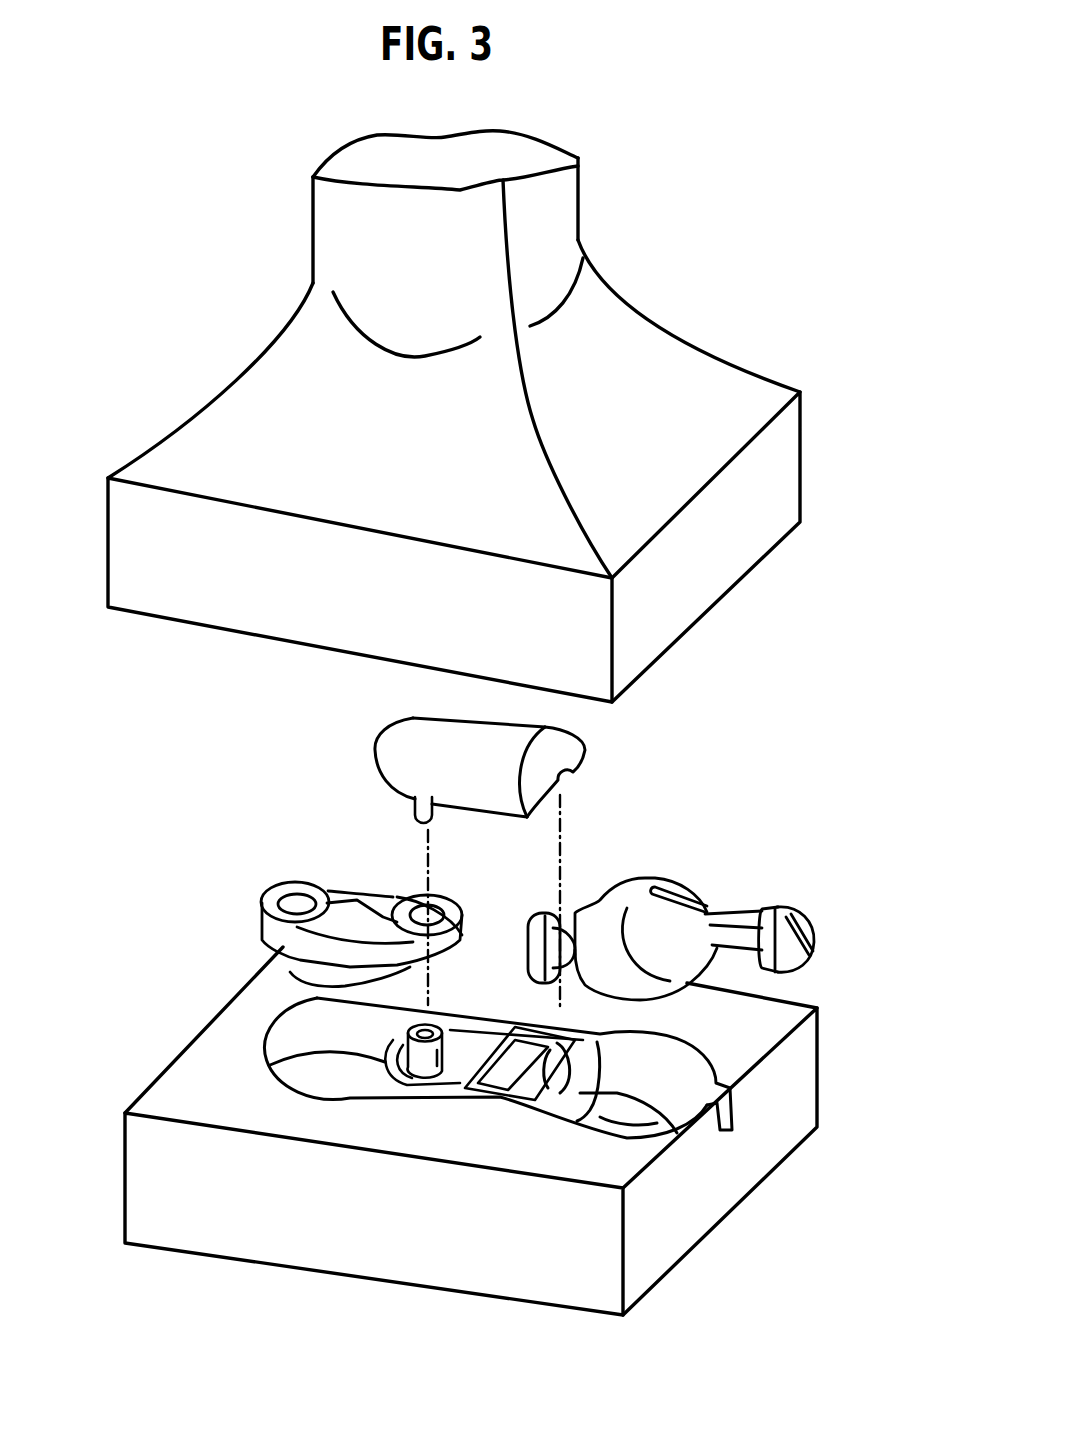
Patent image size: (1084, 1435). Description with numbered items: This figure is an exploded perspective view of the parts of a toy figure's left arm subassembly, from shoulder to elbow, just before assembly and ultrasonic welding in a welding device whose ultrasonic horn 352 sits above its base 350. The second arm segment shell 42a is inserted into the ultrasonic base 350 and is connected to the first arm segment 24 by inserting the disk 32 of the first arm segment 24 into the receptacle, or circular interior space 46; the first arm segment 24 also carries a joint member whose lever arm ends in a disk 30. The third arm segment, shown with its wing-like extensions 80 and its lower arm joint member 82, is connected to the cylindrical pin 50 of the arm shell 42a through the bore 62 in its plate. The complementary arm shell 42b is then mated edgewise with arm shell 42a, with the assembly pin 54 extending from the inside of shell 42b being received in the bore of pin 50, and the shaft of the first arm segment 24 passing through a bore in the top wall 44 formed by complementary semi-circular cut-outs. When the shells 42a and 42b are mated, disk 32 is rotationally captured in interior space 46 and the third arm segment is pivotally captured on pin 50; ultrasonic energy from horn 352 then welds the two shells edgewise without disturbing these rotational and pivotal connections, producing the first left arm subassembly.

The ultrasonic horn 352 is at (782, 480).
The ultrasonic base 350 is at (535, 1153).
The top wall 44 is at (519, 954).
The second arm segment shell 42b is at (410, 735).
The second arm segment shell 42a is at (455, 1095).
The assembly pin 54 is at (407, 807).
The bore 62 is at (413, 910).
The wing-like extensions 80 is at (429, 878).
The lower arm joint member 82 is at (465, 935).
The cylindrical pin 50 is at (308, 1044).
The circular interior space 46 is at (497, 1100).
The first arm segment 24 is at (708, 886).
The disk 32 is at (557, 907).
The disk 30 is at (797, 913).